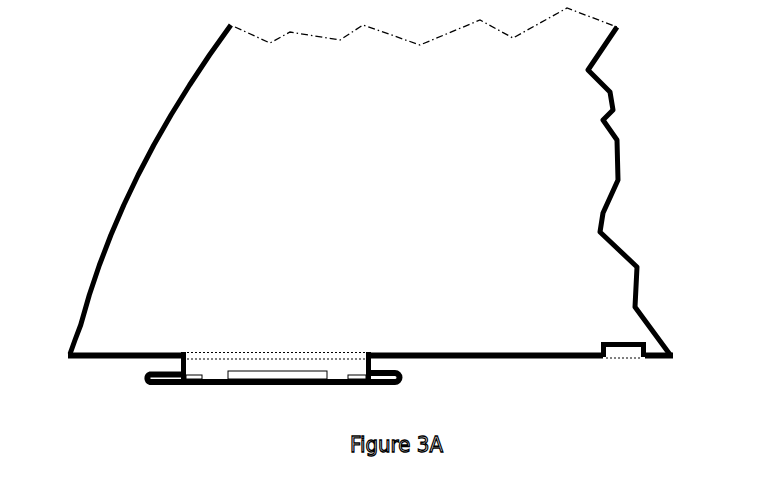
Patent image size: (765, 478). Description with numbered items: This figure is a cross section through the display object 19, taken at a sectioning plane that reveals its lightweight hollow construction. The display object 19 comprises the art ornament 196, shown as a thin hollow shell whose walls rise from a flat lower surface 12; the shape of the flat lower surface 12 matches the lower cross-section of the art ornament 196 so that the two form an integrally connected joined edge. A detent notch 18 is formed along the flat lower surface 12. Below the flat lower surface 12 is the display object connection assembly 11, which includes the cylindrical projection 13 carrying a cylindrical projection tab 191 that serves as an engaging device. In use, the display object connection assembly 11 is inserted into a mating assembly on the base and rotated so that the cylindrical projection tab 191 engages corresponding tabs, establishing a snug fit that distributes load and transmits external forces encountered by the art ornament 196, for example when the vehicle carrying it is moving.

The art ornament 196 is at (137, 172).
The display object 19 is at (650, 259).
The flat lower surface 12 is at (537, 350).
The detent notch 18 is at (633, 358).
The cylindrical projection 13 is at (243, 367).
The display object connection assembly 11 is at (125, 384).
The cylindrical projection tab 191 is at (406, 378).